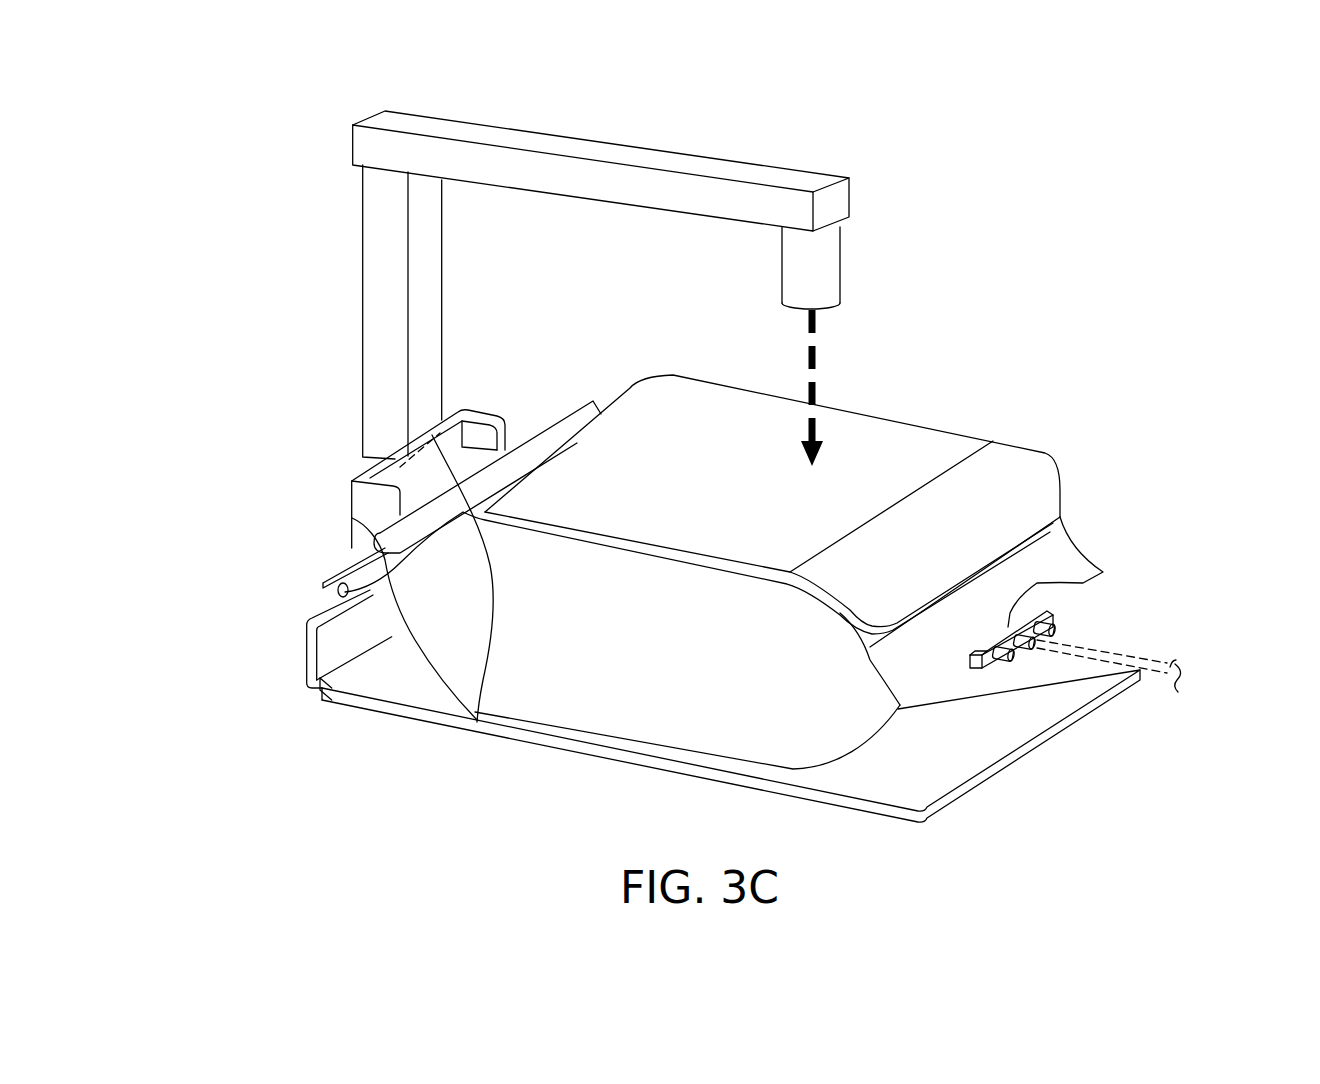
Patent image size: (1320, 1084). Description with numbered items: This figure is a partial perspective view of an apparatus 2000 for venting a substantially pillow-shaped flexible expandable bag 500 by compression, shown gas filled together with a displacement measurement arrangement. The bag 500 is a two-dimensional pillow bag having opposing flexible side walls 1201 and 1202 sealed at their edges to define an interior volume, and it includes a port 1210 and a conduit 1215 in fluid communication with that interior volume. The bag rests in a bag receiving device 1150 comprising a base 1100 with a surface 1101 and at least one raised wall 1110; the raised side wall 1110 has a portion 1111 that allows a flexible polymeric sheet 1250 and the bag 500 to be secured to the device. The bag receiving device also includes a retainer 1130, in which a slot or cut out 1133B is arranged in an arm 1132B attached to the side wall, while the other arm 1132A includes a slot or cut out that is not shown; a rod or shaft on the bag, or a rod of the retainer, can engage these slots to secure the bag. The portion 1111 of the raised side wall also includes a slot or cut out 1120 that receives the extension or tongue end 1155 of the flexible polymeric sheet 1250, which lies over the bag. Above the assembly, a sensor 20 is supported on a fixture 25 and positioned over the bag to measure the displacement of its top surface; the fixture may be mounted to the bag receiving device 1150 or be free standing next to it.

The apparatus for venting 2000 is at (292, 313).
The fixture 25 is at (338, 187).
The sensor 20 is at (815, 272).
The retainer 1130 is at (322, 478).
The tongue end 1155 is at (463, 458).
The arm 1132A is at (492, 431).
The portion of raised side wall 1111 is at (398, 457).
The arm 1132B is at (353, 548).
The slot or cut out 1133B is at (372, 528).
The bag receiving device 1150 is at (285, 655).
The raised wall 1110 is at (305, 655).
The surface 1101 is at (347, 690).
The base 1100 is at (620, 752).
The flexible bag 500 is at (790, 700).
The flexible side wall 1202 is at (430, 680).
The slot or cut out 1120 is at (477, 722).
The flexible polymeric sheet 1250 is at (725, 478).
The flexible side wall 1201 is at (1053, 562).
The port 1210 is at (1103, 572).
The conduit 1215 is at (1163, 677).